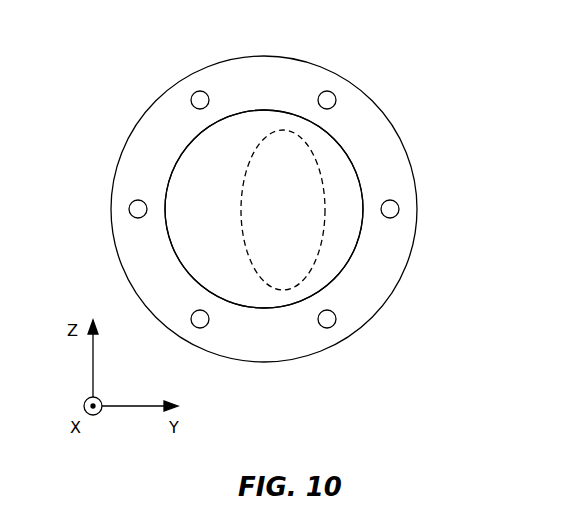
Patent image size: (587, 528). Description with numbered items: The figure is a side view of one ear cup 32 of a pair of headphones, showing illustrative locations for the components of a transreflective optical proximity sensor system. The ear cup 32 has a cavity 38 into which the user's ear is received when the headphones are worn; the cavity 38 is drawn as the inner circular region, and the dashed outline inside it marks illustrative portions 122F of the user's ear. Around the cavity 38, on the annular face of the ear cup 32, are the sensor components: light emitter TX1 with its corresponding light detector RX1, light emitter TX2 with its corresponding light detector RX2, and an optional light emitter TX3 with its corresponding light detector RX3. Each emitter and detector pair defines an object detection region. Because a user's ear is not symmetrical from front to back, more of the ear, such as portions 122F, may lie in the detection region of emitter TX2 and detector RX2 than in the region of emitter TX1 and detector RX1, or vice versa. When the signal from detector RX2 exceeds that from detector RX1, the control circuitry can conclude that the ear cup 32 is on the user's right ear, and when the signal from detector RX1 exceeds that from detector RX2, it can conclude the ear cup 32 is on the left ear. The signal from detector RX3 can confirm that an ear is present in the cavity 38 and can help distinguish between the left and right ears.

The ear cup 32 is at (385, 135).
The cavity 38 is at (201, 166).
The portions of the user's ear 122F is at (322, 247).
The light detector RX1 is at (200, 91).
The light detector RX2 is at (327, 328).
The light detector RX3 is at (129, 209).
The light emitter TX1 is at (200, 328).
The light emitter TX2 is at (327, 91).
The light emitter TX3 is at (399, 209).